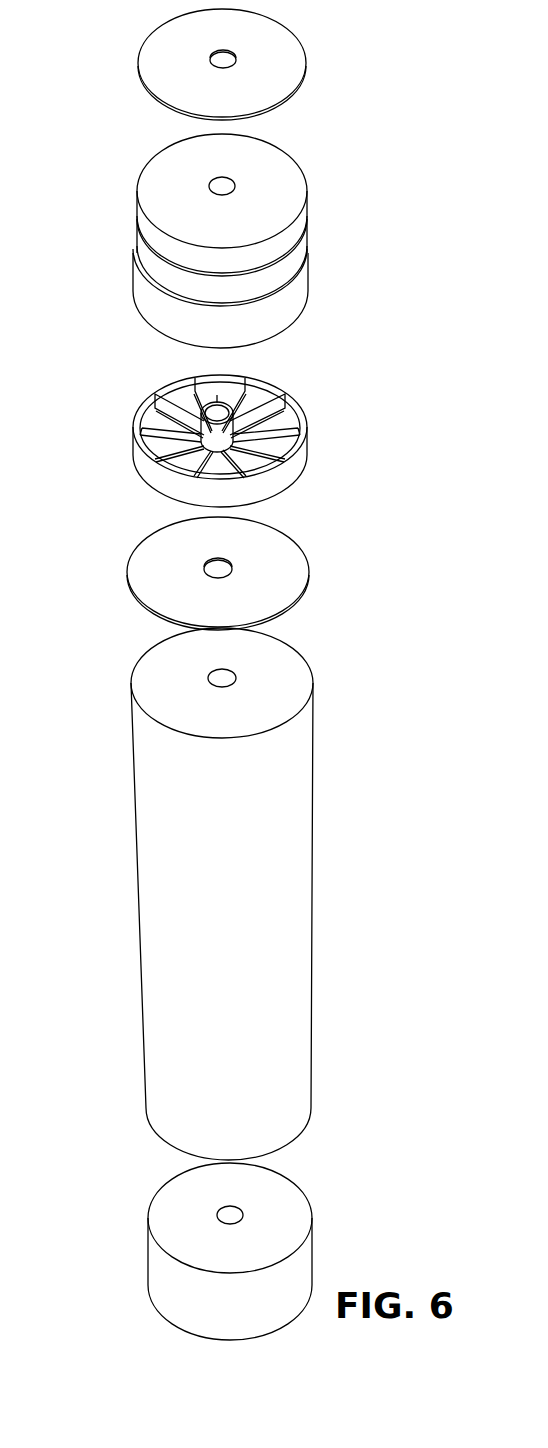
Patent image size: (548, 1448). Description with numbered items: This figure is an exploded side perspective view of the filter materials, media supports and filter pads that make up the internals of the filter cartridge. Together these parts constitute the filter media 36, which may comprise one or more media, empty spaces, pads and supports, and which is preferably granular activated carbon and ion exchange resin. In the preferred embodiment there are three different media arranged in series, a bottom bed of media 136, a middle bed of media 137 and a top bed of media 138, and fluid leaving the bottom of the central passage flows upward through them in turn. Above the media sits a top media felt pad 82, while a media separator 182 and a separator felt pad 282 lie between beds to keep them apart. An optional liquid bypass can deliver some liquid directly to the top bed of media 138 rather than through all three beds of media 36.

The top media felt pad 82 is at (282, 57).
The top bed of media 138 is at (252, 238).
The media separator 182 is at (280, 393).
The separator felt pad 282 is at (288, 543).
The media 137 is at (273, 901).
The media 136 is at (280, 1245).
The filter media 36 is at (136, 1217).